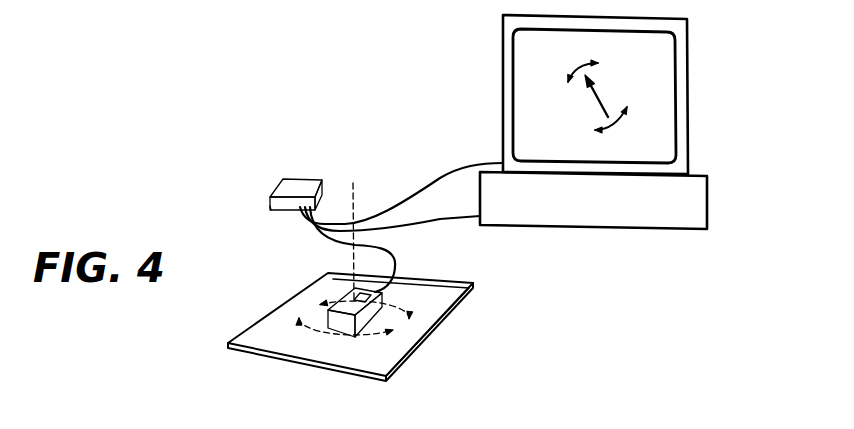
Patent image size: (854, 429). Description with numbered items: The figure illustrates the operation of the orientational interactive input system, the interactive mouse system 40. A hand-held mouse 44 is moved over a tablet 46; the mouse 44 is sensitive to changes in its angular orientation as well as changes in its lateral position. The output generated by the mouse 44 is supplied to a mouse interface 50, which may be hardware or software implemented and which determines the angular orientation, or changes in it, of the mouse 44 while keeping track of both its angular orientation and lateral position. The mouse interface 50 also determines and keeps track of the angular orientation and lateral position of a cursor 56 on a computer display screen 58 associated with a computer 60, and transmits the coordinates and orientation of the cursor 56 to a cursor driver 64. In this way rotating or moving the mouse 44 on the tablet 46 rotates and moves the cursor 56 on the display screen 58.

The mouse system 40 is at (442, 348).
The hand-held mouse 44 is at (333, 308).
The tablet 46 is at (427, 305).
The mouse interface 50 is at (270, 208).
The cursor 56 is at (602, 99).
The computer display screen 58 is at (655, 118).
The computer 60 is at (680, 207).
The cursor driver 64 is at (318, 181).